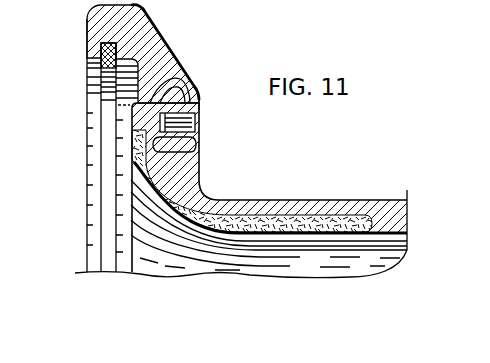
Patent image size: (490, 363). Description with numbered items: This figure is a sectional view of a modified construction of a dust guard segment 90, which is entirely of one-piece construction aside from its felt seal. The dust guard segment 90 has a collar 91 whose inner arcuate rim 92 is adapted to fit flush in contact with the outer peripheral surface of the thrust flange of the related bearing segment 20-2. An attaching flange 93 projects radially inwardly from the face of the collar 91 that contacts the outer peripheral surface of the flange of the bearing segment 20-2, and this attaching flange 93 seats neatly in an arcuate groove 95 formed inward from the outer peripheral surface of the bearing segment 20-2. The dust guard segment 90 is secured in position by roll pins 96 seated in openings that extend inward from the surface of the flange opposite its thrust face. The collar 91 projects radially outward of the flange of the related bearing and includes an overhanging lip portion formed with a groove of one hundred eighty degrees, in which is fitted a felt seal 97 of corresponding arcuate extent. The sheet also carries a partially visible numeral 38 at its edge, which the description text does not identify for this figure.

The bearing segment 20-2 is at (252, 196).
The collar 91 is at (145, 27).
The dust guard segment 90 is at (181, 53).
The attaching flange 93 is at (197, 87).
The inner arcuate rim 92 is at (162, 95).
The felt seal 97 is at (100, 66).
The roll pin 96 is at (97, 30).
The arcuate groove 95 is at (194, 150).
The adjacent member 38 is at (489, 9).